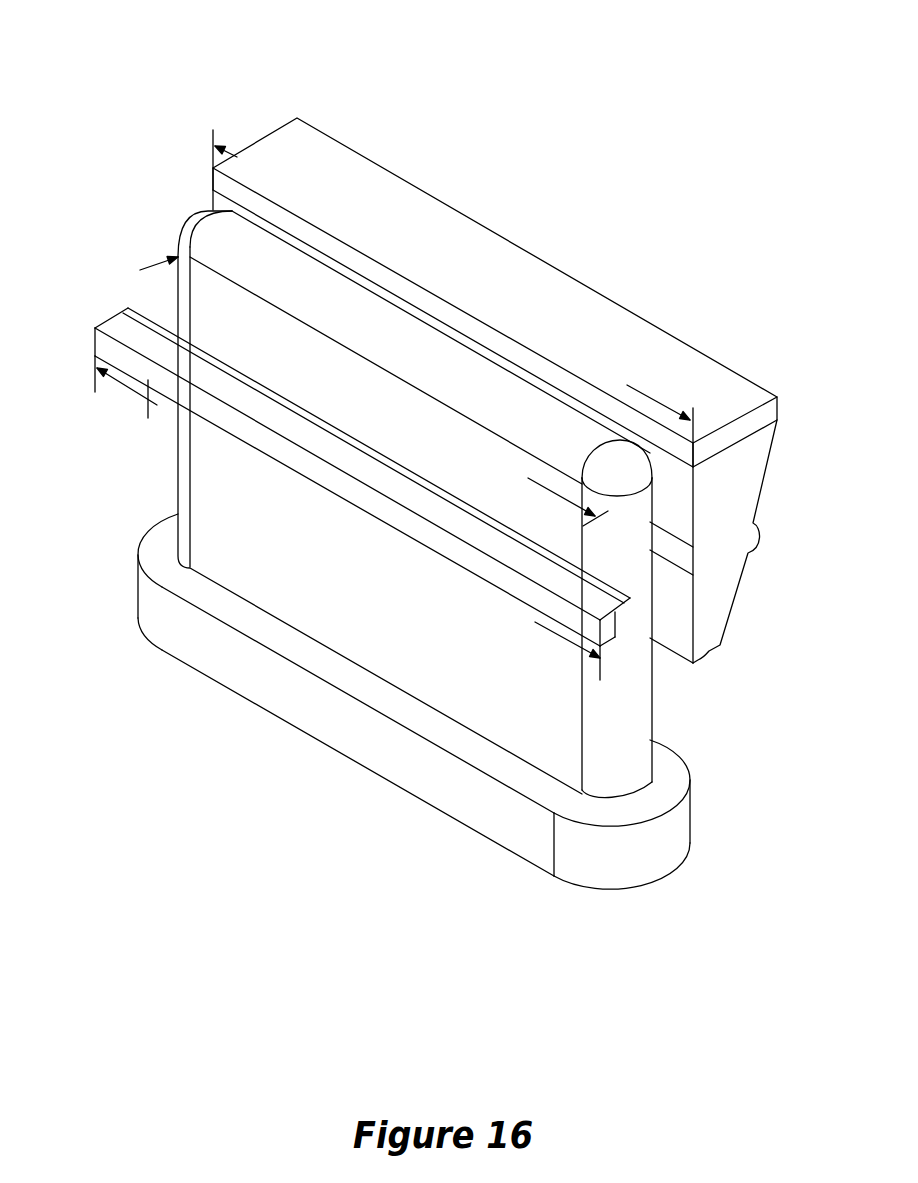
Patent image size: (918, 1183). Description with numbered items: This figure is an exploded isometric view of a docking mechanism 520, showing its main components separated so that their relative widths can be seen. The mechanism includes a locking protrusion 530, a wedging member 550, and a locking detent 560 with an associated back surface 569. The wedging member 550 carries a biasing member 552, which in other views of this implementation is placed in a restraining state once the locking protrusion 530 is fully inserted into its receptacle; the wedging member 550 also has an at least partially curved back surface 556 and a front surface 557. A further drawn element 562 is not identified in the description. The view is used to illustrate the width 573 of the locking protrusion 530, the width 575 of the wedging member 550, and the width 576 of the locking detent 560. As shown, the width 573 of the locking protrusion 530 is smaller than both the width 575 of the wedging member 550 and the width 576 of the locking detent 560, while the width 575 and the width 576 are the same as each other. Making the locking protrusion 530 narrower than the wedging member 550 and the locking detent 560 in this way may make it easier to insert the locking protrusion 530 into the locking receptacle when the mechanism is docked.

The docking mechanism 520 is at (84, 43).
The locking protrusion 530 is at (414, 502).
The wedging member 550 is at (713, 535).
The biasing member 552 is at (495, 292).
The back surface 556 is at (757, 531).
The front surface 557 is at (691, 572).
The locking detent 560 is at (620, 634).
The middle rail 562 is at (333, 490).
The back surface 569 is at (620, 637).
The width of the locking protrusion 573 is at (203, 292).
The width of the wedging member 575 is at (271, 182).
The width of the locking detent 576 is at (126, 387).